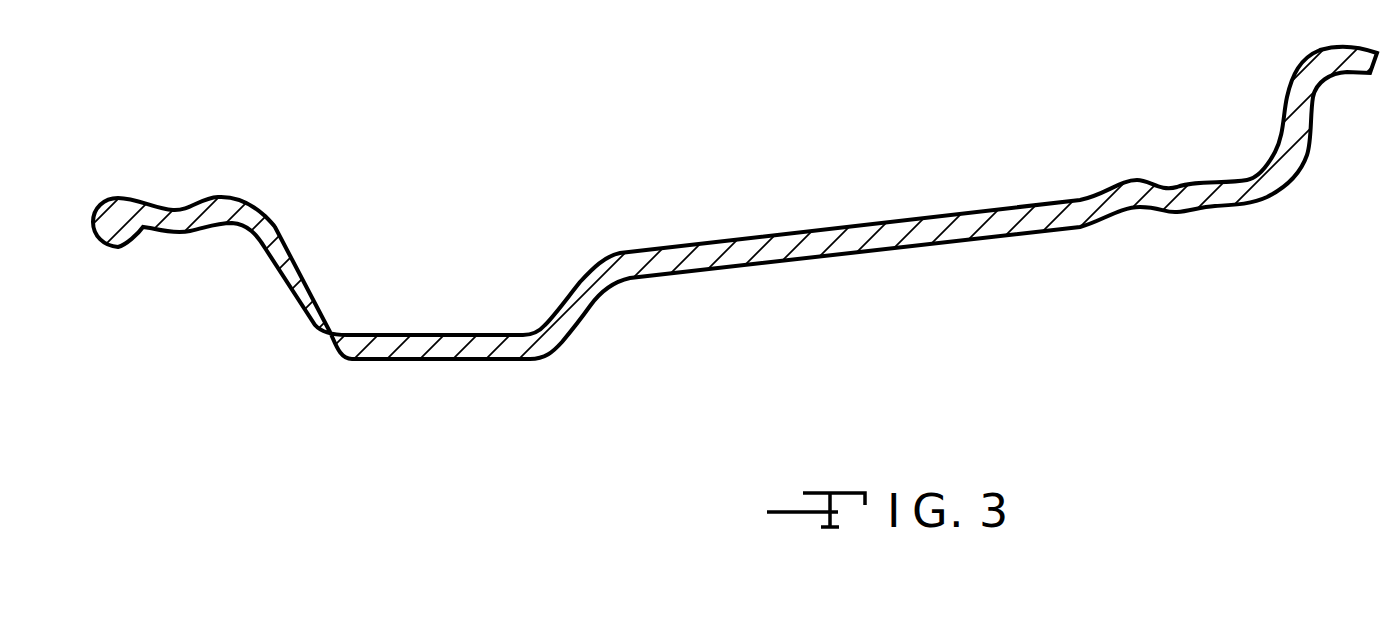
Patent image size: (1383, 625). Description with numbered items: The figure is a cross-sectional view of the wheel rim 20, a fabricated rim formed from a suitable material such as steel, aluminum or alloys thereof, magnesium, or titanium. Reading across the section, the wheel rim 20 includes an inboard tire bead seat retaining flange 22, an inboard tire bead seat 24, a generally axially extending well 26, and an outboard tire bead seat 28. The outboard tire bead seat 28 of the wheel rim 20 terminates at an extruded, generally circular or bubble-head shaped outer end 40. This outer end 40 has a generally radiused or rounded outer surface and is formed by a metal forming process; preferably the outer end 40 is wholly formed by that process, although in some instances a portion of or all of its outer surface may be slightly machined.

The wheel rim 20 is at (833, 260).
The inboard tire bead seat retaining flange 22 is at (1283, 127).
The inboard tire bead seat 24 is at (1197, 180).
The generally axially extending well 26 is at (690, 243).
The outboard tire bead seat 28 is at (173, 208).
The outer end 40 is at (110, 253).